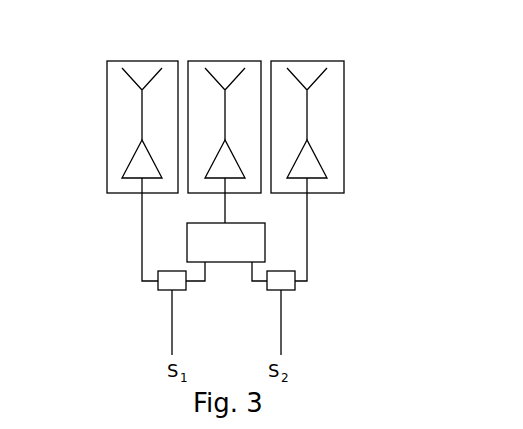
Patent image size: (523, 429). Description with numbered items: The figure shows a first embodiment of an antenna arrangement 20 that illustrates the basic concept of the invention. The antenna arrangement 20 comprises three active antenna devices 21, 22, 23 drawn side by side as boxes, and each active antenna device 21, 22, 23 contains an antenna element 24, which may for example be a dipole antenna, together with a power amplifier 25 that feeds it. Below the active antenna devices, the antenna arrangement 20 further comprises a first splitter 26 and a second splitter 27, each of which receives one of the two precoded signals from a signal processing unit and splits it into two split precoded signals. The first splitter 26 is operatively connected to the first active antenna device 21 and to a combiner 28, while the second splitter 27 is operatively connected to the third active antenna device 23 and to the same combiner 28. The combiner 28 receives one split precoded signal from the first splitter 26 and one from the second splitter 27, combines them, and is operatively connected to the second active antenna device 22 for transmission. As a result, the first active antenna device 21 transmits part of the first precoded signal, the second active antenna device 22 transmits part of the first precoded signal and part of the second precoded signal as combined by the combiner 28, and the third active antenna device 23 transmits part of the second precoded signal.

The antenna arrangement 20 is at (414, 70).
The first active antenna device 21 is at (141, 69).
The second active antenna device 22 is at (224, 69).
The third active antenna device 23 is at (307, 69).
The antenna element 24 is at (138, 91).
The power amplifier 25 is at (138, 158).
The first splitter 26 is at (163, 285).
The second splitter 27 is at (285, 282).
The combiner 28 is at (255, 245).